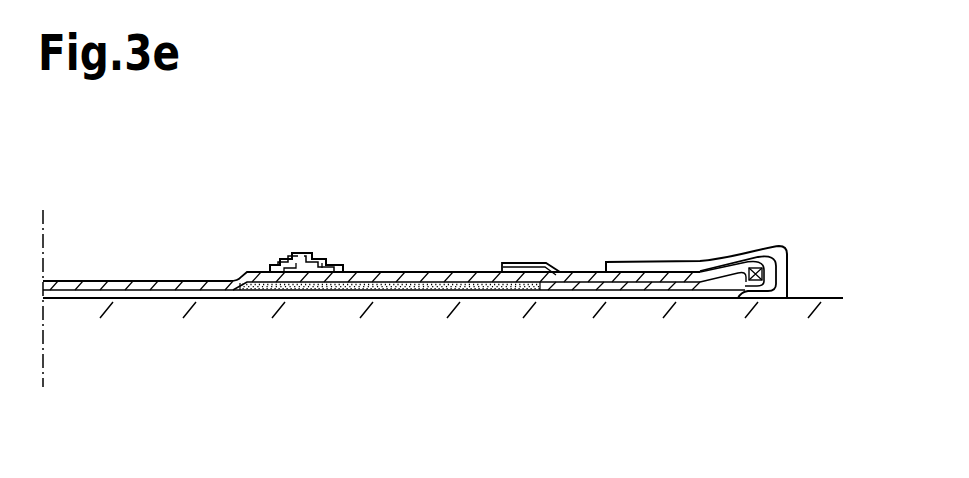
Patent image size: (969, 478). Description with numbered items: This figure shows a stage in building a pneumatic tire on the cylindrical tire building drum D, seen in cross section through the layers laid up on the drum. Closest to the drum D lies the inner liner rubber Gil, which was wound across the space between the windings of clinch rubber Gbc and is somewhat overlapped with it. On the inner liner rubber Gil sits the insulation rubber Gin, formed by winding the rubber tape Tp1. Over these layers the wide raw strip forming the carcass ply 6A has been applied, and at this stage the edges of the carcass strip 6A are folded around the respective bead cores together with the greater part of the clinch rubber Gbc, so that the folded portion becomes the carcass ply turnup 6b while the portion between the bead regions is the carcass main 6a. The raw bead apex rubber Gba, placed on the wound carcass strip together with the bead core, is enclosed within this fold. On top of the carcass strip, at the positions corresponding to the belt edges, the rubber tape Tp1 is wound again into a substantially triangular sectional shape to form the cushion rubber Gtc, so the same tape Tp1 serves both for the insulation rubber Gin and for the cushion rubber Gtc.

The rubber tape Tp1 is at (272, 255).
The cushion rubber Gtc is at (322, 250).
The carcass ply 6A is at (588, 135).
The carcass main 6a is at (468, 272).
The carcass ply turnup 6b is at (567, 272).
The clinch rubber Gbc is at (680, 262).
The inner liner rubber Gil is at (147, 302).
The tire building drum D is at (352, 367).
The insulation rubber Gin is at (434, 291).
The bead apex rubber Gba is at (728, 280).